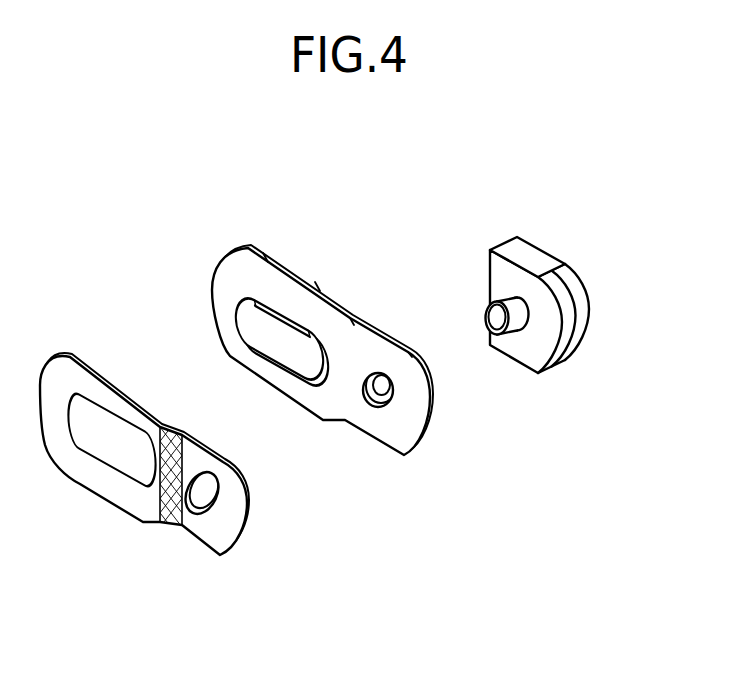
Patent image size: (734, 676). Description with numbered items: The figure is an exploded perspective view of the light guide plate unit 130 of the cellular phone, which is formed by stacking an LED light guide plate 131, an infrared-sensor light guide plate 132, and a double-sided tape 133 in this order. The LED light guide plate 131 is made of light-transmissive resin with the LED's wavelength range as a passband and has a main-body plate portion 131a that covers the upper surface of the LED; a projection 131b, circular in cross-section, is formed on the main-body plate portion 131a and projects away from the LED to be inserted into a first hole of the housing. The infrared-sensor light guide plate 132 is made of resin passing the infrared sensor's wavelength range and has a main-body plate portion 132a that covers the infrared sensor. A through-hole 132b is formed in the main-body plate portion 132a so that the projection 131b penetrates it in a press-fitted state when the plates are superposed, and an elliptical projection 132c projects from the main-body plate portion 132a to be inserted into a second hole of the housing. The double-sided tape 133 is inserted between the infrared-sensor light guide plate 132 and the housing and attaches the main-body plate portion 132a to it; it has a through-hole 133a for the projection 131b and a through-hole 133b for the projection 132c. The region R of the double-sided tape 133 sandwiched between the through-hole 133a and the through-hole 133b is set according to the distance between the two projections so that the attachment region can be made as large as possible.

The light guide plate unit 130 is at (98, 220).
The LED light guide plate 131 is at (546, 278).
The main-body plate portion 131a is at (522, 259).
The projection 131b is at (498, 302).
The infrared-sensor light guide plate 132 is at (365, 334).
The main-body plate portion 132a is at (285, 293).
The through-hole 132b is at (380, 384).
The projection 132c is at (277, 354).
The double-sided tape 133 is at (185, 490).
The through-hole 133a is at (206, 502).
The through-hole 133b is at (107, 456).
The region R is at (170, 426).